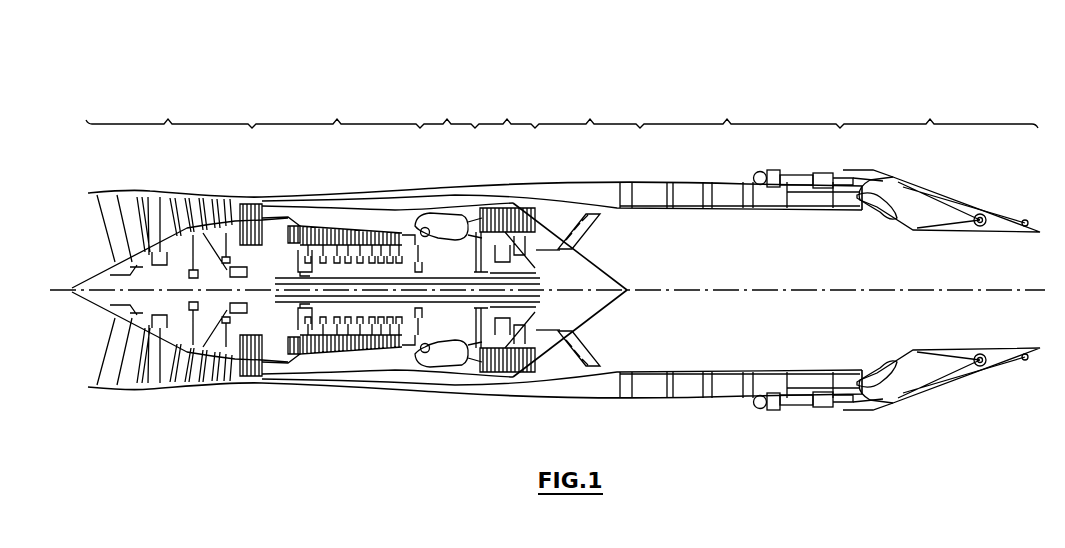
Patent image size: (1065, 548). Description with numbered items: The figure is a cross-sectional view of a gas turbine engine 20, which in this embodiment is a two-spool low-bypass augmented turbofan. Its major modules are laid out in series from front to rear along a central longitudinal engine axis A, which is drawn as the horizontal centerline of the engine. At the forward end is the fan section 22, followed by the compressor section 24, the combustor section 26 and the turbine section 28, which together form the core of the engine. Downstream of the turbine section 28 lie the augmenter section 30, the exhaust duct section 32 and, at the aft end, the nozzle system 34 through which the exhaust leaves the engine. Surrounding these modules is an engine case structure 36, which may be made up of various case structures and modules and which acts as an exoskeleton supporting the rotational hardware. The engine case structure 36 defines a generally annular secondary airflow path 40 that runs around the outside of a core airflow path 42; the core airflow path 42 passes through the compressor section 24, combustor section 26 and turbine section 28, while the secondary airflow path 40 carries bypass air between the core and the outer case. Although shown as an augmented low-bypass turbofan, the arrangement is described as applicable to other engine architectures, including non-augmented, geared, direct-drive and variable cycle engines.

The gas turbine engine 20 is at (789, 47).
The fan section 22 is at (180, 241).
The compressor section 24 is at (342, 230).
The combustor section 26 is at (442, 232).
The turbine section 28 is at (505, 234).
The augmenter section 30 is at (570, 237).
The exhaust duct section 32 is at (740, 247).
The nozzle system 34 is at (897, 253).
The engine case structure 36 is at (499, 398).
The secondary airflow path 40 is at (310, 376).
The core airflow path 42 is at (250, 380).
The central longitudinal engine axis A is at (853, 292).